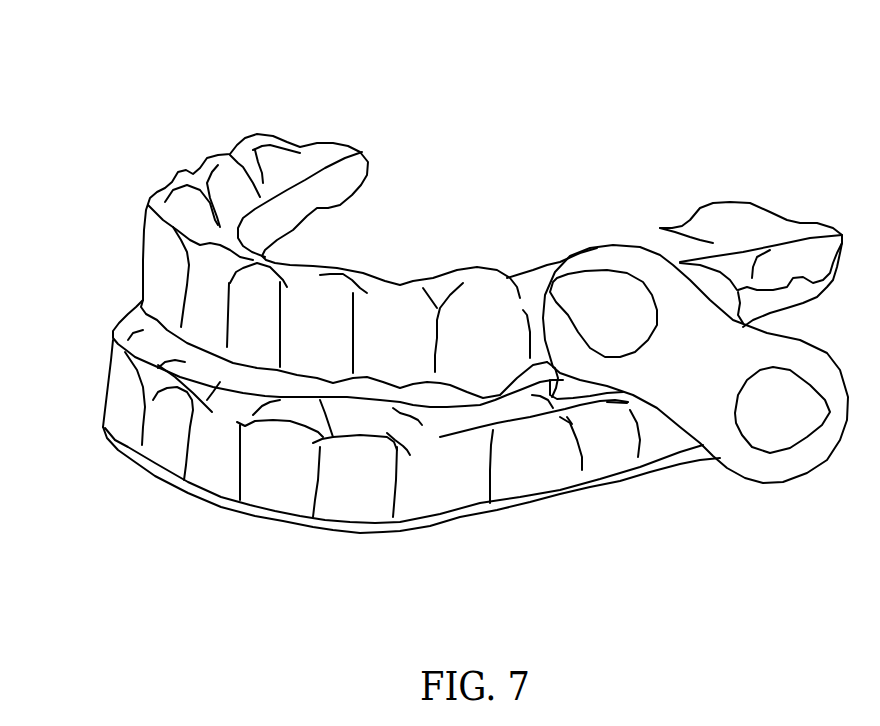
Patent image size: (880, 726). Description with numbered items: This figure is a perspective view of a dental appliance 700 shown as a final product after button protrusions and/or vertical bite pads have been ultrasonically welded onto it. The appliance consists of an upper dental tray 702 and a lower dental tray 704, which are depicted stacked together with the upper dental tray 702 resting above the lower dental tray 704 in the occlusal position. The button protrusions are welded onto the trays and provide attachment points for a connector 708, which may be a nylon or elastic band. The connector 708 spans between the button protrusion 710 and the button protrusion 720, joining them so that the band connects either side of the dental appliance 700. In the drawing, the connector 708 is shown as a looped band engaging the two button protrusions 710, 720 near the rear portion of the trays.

The oral appliance 700 is at (99, 57).
The upper tray 702 is at (441, 270).
The lower tray 704 is at (375, 431).
The connector body 708 is at (695, 383).
The first opening 710 is at (603, 273).
The second opening 720 is at (782, 451).